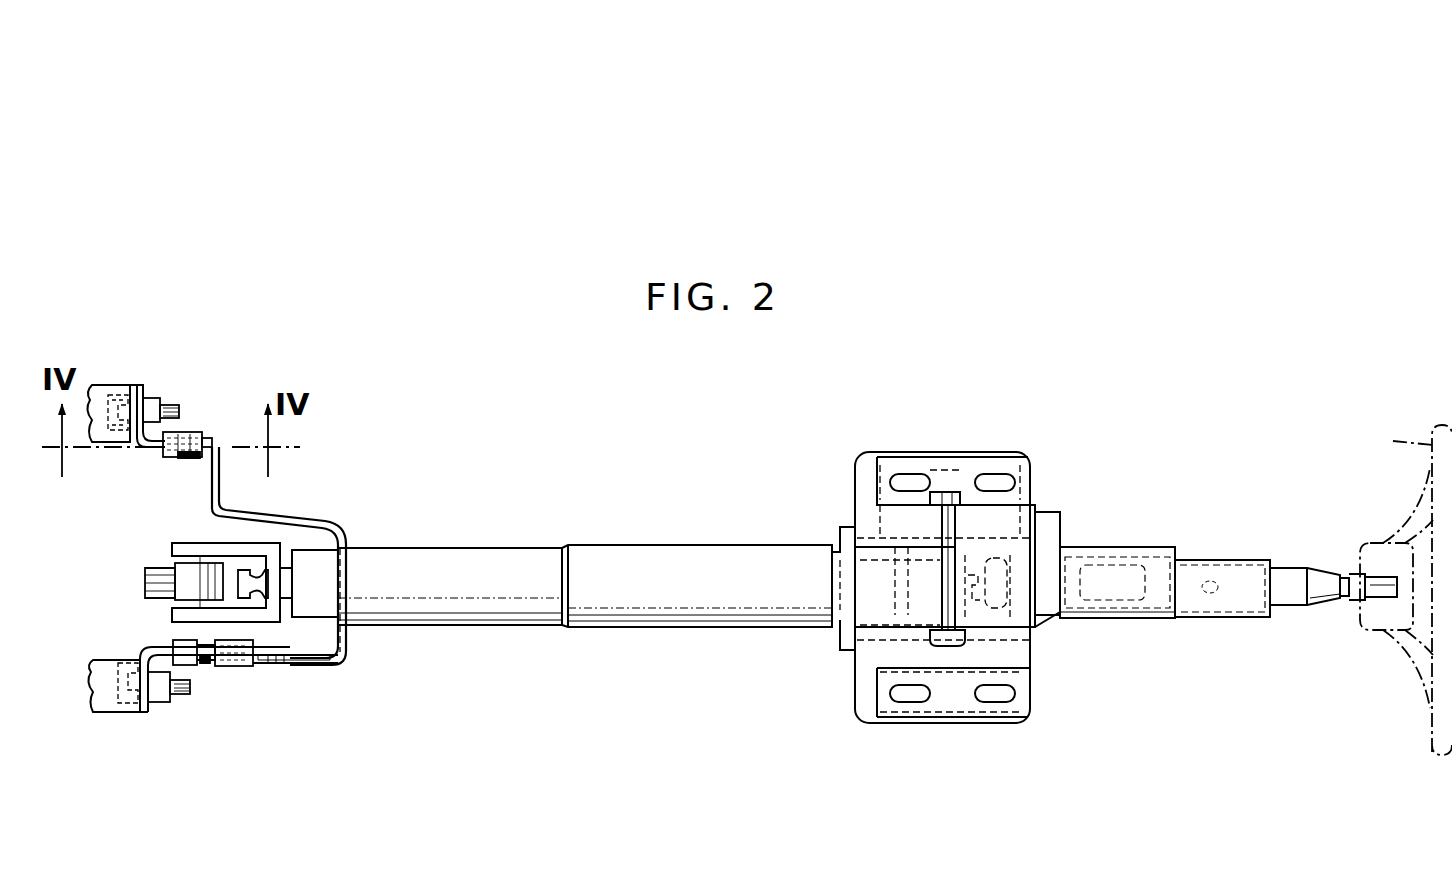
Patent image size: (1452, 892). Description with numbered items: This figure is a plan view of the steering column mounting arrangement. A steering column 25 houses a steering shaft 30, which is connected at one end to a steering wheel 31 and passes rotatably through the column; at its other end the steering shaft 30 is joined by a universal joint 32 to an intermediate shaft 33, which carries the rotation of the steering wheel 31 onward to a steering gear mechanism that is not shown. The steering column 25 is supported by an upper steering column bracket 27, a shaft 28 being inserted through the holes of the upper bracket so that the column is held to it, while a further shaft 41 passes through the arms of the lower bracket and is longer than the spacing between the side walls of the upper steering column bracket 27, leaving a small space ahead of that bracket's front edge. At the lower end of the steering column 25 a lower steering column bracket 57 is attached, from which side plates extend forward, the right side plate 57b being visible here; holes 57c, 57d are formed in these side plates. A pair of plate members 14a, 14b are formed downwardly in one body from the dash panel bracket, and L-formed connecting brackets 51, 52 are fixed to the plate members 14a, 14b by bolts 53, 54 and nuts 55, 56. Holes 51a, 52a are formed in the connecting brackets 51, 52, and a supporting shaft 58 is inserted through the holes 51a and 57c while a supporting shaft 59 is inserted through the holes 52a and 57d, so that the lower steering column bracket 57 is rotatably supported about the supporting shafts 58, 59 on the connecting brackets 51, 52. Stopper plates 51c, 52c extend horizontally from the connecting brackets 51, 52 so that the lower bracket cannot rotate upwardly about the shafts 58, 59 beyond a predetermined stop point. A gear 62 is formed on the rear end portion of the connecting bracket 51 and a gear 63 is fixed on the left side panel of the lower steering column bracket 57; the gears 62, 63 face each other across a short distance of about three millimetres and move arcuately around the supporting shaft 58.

The plate member 14a is at (108, 714).
The plate member 14b is at (100, 392).
The steering column 25 is at (686, 612).
The upper steering column bracket 27 is at (840, 712).
The shaft 28 is at (966, 643).
The steering shaft 30 is at (1286, 568).
The steering wheel 31 is at (1403, 590).
The universal joint 32 is at (288, 542).
The intermediate shaft 33 is at (145, 575).
The shaft 41 is at (842, 643).
The L-formed connecting bracket 51 is at (160, 712).
The hole 51a is at (212, 664).
The stopper plate 51c is at (264, 664).
The L-formed connecting bracket 52 is at (143, 388).
The hole 52a is at (206, 437).
The stopper plate 52c is at (192, 434).
The bolt 53 is at (125, 662).
The bolt 54 is at (116, 396).
The nut 55 is at (170, 704).
The nut 56 is at (155, 424).
The lower steering column bracket 57 is at (336, 663).
The side plate 57b is at (219, 487).
The hole 57c is at (196, 666).
The hole 57d is at (180, 432).
The supporting shaft 58 is at (208, 690).
The supporting shaft 59 is at (178, 470).
The gear 62 is at (300, 645).
The gear 63 is at (283, 645).